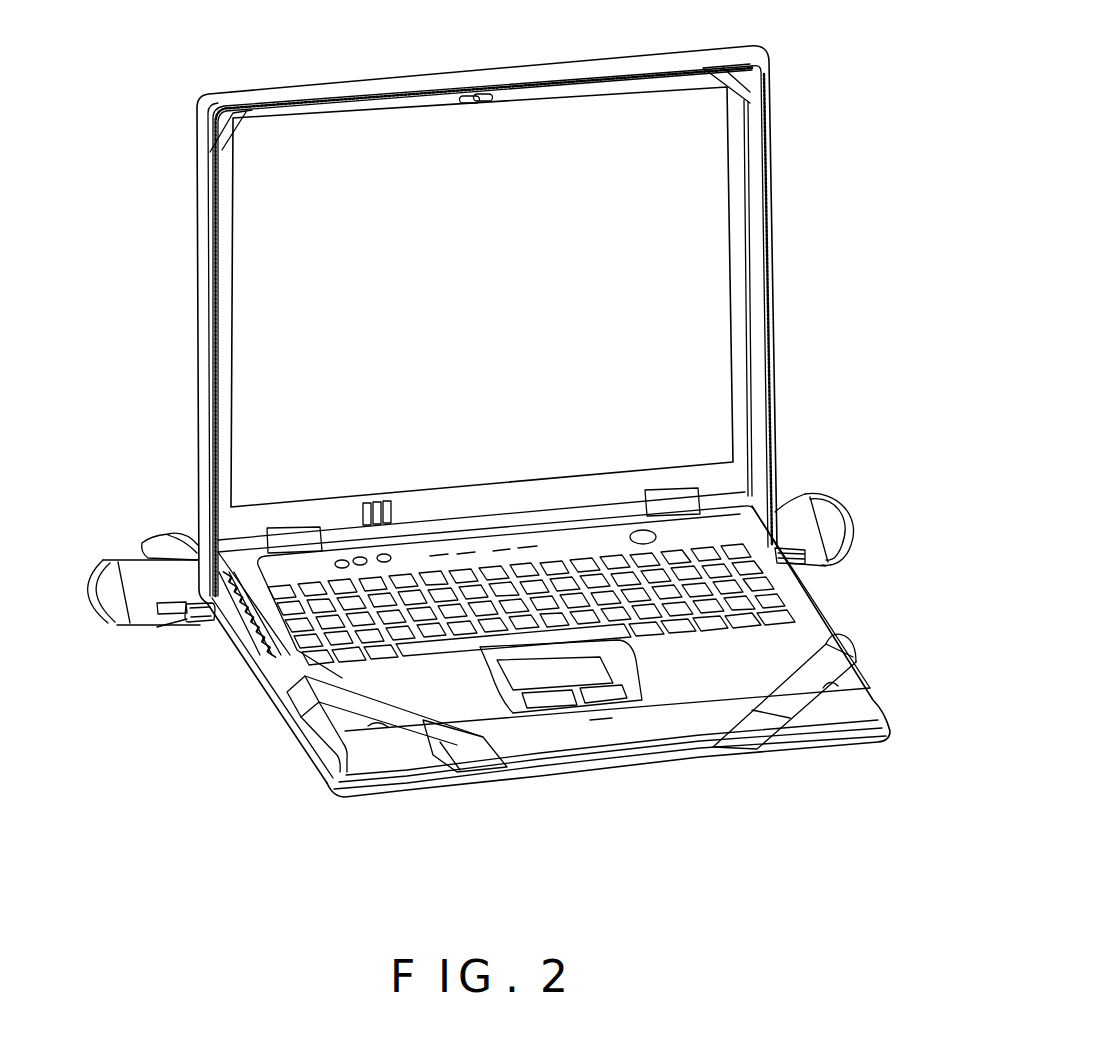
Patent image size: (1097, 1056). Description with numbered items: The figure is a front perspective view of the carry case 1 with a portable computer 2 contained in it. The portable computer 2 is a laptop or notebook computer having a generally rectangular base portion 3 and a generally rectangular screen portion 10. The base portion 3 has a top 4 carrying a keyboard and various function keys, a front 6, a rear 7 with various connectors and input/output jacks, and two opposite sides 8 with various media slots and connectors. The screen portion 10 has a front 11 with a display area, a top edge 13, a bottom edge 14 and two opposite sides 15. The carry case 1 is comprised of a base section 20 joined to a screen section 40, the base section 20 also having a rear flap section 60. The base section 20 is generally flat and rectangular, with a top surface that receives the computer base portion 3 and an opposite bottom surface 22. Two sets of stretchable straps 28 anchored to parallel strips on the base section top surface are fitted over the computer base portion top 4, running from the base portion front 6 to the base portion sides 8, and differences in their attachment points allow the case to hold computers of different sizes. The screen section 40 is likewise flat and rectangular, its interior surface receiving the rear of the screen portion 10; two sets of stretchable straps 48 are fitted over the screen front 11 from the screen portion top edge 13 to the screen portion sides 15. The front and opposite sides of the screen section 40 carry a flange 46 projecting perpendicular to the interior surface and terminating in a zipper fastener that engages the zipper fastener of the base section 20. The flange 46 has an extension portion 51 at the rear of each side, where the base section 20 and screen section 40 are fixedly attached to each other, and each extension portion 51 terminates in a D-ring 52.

The carry case 1 is at (540, 464).
The portable computer 2 is at (733, 470).
The base portion 3 is at (540, 674).
The top 4 is at (800, 610).
The front 6 is at (638, 728).
The rear 7 is at (537, 530).
The sides 8 is at (272, 655).
The screen portion 10 is at (528, 320).
The front 11 is at (529, 326).
The top edge 13 is at (353, 114).
The bottom edge 14 is at (453, 523).
The sides 15 is at (225, 358).
The base section 20 is at (576, 689).
The bottom surface 22 is at (423, 727).
The stretchable straps 28 is at (790, 688).
The screen section 40 is at (483, 414).
The flange 46 is at (753, 307).
The stretchable straps 48 is at (232, 125).
The extension portion 51 is at (143, 595).
The D-ring 52 is at (97, 559).
The rear flap section 60 is at (170, 530).